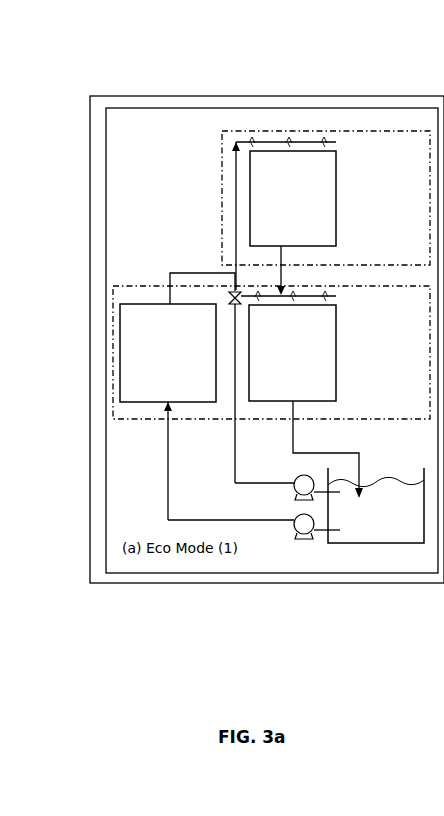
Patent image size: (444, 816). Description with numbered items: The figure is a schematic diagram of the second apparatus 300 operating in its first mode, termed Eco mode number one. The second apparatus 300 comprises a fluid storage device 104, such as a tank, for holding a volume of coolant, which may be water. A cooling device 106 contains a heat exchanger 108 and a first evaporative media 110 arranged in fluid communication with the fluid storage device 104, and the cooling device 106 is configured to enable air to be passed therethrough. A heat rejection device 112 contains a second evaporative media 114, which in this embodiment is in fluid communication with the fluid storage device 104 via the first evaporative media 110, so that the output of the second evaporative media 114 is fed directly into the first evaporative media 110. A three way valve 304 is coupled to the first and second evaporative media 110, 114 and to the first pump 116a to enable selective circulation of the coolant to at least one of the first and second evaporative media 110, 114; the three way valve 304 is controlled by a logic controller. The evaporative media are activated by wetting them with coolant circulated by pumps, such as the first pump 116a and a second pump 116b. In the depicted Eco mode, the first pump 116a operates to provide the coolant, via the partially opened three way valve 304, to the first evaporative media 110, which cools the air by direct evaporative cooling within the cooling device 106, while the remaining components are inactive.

The second apparatus 300 is at (408, 106).
The three way valve 304 is at (233, 290).
The cooling device 106 is at (153, 285).
The heat exchanger 108 is at (120, 356).
The first evaporative media 110 is at (299, 402).
The heat rejection device 112 is at (340, 131).
The second evaporative media 114 is at (270, 148).
The first pump 116a is at (294, 487).
The second pump 116b is at (294, 521).
The fluid storage device 104 is at (383, 544).